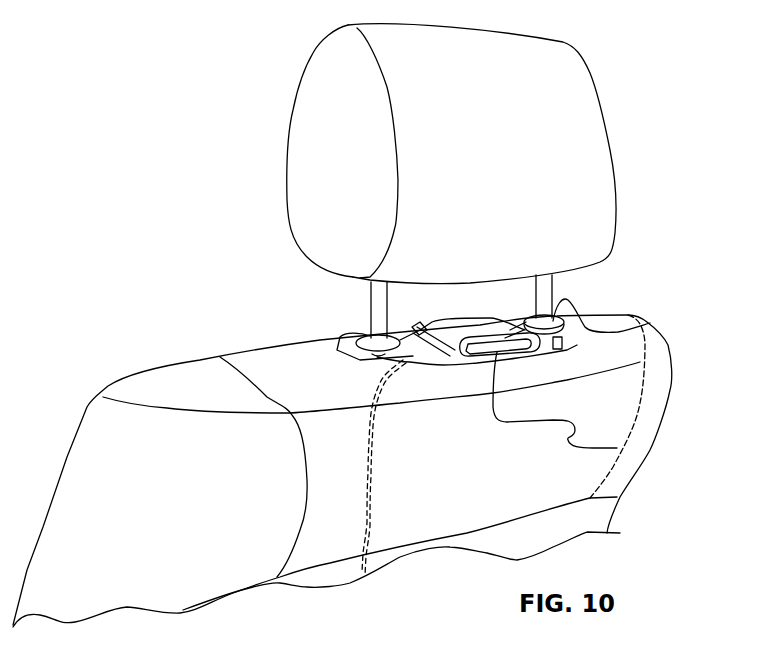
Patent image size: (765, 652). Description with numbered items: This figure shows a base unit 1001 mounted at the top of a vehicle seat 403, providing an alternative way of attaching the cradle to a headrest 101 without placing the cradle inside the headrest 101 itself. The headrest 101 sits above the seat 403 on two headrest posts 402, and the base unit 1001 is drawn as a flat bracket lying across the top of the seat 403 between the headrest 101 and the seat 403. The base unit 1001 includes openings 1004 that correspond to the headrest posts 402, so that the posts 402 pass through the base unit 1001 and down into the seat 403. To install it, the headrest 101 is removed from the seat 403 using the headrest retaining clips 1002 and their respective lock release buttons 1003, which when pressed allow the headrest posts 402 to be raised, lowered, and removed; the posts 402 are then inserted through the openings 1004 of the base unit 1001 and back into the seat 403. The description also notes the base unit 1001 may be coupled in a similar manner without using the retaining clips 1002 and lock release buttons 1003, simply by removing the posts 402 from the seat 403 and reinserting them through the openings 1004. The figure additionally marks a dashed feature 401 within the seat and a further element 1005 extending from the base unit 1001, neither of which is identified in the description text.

The headrest 101 is at (292, 152).
The seat back 401 is at (386, 457).
The headrest posts 402 is at (545, 290).
The seat 403 is at (272, 357).
The base unit 1001 is at (432, 322).
The headrest retaining clips 1002 is at (378, 355).
The lock release buttons 1003 is at (340, 342).
The openings 1004 is at (650, 323).
The cable 1005 is at (617, 448).